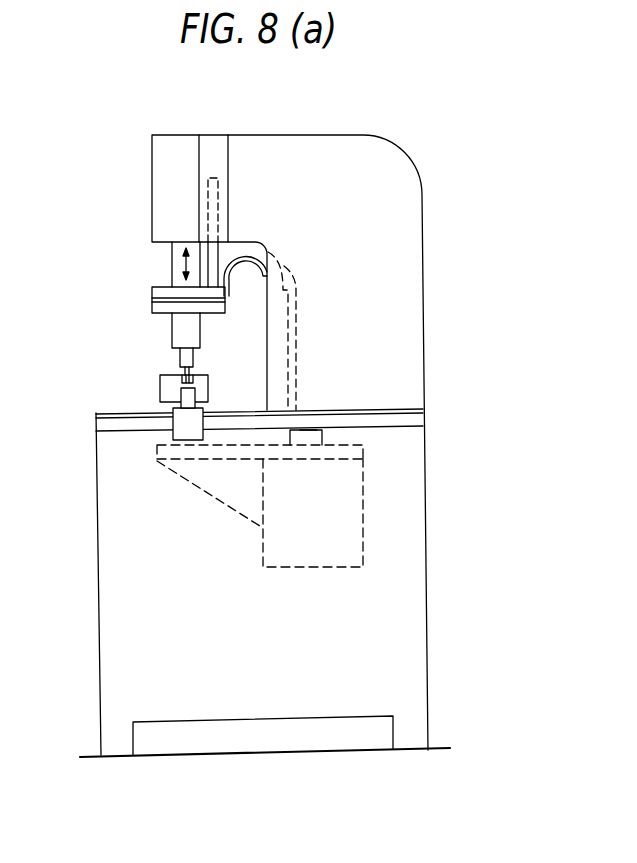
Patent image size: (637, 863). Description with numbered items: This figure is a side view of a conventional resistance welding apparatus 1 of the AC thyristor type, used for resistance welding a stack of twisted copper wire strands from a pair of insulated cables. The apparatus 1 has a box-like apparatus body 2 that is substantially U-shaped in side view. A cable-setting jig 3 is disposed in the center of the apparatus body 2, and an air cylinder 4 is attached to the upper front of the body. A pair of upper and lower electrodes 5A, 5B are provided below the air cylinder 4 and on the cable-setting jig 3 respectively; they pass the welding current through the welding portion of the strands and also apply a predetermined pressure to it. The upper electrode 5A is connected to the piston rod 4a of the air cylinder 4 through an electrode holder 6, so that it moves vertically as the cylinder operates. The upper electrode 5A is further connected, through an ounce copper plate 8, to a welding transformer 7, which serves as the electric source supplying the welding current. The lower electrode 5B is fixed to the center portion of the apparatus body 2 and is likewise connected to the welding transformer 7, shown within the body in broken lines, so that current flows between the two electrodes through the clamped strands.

The resistance welding apparatus 1 is at (432, 428).
The apparatus body 2 is at (97, 618).
The cable-setting jig 3 is at (160, 386).
The air cylinder 4 is at (152, 151).
The piston rod 4a is at (172, 255).
The upper electrode 5A is at (180, 360).
The lower electrode 5B is at (181, 396).
The electrode holder 6 is at (172, 328).
The welding transformer 7 is at (363, 545).
The ounce copper plate 8 is at (251, 240).